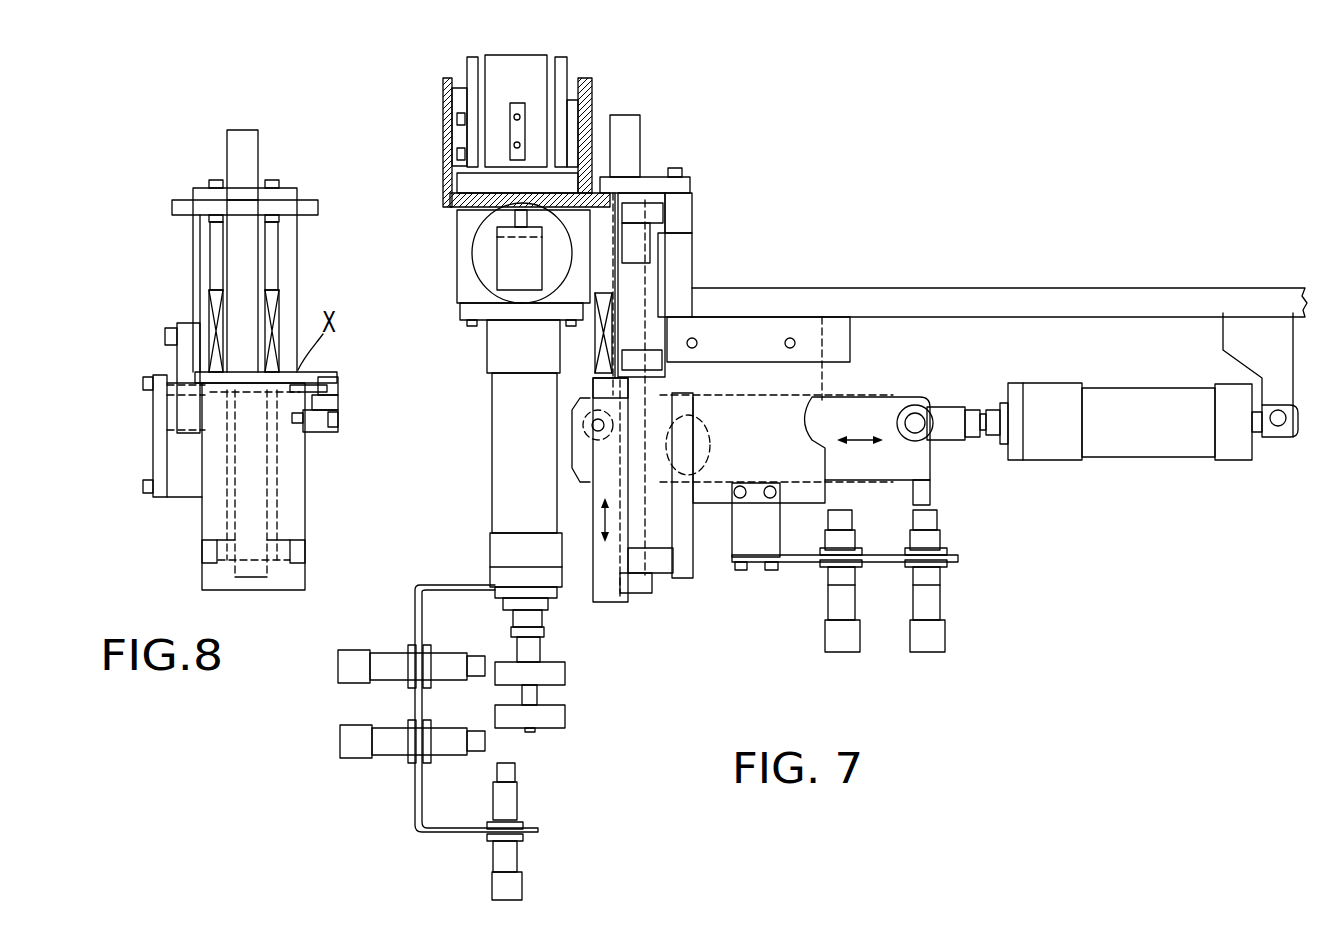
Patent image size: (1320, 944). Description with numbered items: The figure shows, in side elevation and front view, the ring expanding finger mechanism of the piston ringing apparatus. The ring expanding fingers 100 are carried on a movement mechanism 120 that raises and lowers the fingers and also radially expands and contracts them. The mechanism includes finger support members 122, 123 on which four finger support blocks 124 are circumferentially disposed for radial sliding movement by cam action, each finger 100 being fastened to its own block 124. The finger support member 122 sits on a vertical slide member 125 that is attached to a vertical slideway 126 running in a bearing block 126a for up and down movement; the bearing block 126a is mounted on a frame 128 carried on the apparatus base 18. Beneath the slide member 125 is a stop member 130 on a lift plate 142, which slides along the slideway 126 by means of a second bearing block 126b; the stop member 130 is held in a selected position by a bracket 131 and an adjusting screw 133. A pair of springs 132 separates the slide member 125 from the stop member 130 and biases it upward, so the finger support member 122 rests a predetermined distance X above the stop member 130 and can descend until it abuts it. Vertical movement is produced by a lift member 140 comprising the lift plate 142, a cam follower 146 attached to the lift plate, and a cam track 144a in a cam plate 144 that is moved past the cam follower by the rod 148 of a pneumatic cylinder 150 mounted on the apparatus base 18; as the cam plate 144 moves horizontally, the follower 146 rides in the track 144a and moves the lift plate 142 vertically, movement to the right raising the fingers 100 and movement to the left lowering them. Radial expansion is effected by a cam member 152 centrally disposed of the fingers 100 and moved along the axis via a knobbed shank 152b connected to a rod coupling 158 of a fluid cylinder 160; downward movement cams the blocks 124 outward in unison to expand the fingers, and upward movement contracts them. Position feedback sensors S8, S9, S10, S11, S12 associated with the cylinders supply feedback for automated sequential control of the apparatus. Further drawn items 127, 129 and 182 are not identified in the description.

In FIG. 7, the apparatus base 18 is at (985, 292).
In FIG. 7, the rail mounting plate 182 is at (836, 336).
In FIG. 7, the ring expanding fingers 100 is at (475, 58).
In FIG. 7, the movement mechanism 120 is at (738, 134).
In FIG. 8, the finger support member 122 is at (172, 210).
In FIG. 7, the finger support member 122 is at (452, 200).
In FIG. 7, the finger support member 123 is at (460, 176).
In FIG. 7, the finger support block 124 is at (462, 125).
In FIG. 8, the vertical slide member 125 is at (200, 285).
In FIG. 7, the vertical slide member 125 is at (607, 263).
In FIG. 8, the vertical slideway 126 is at (250, 145).
In FIG. 7, the vertical slideway 126 is at (636, 133).
In FIG. 7, the bearing block 126a is at (652, 295).
In FIG. 7, the second bearing block 126b is at (693, 520).
In FIG. 8, the housing 127 is at (198, 228).
In FIG. 7, the housing 127 is at (445, 93).
In FIG. 7, the frame 128 is at (683, 208).
In FIG. 7, the pillar 129 is at (465, 62).
In FIG. 8, the stop member 130 is at (300, 378).
In FIG. 7, the stop member 130 is at (590, 382).
In FIG. 8, the bracket 131 is at (338, 425).
In FIG. 8, the springs 132 is at (262, 288).
In FIG. 7, the springs 132 is at (588, 343).
In FIG. 8, the adjusting screw 133 is at (335, 390).
In FIG. 7, the lift member 140 is at (980, 515).
In FIG. 8, the lift plate 142 is at (288, 493).
In FIG. 7, the lift plate 142 is at (592, 572).
In FIG. 8, the cam plate 144 is at (167, 515).
In FIG. 7, the cam plate 144 is at (882, 397).
In FIG. 8, the cam track 144a is at (160, 485).
In FIG. 7, the cam track 144a is at (693, 423).
In FIG. 8, the cam follower 146 is at (163, 428).
In FIG. 7, the cam follower 146 is at (585, 438).
In FIG. 7, the rod 148 is at (985, 440).
In FIG. 7, the pneumatic cylinder 150 is at (1158, 447).
In FIG. 7, the cam member 152 is at (552, 106).
In FIG. 7, the knobbed shank 152b is at (497, 234).
In FIG. 7, the rod coupling 158 is at (505, 263).
In FIG. 7, the fluid cylinder 160 is at (512, 426).
In FIG. 7, the position feedback sensor S8 is at (338, 668).
In FIG. 7, the position feedback sensor S9 is at (340, 735).
In FIG. 7, the position feedback sensor S10 is at (498, 884).
In FIG. 7, the position feedback sensor S11 is at (838, 648).
In FIG. 7, the position feedback sensor S12 is at (922, 648).